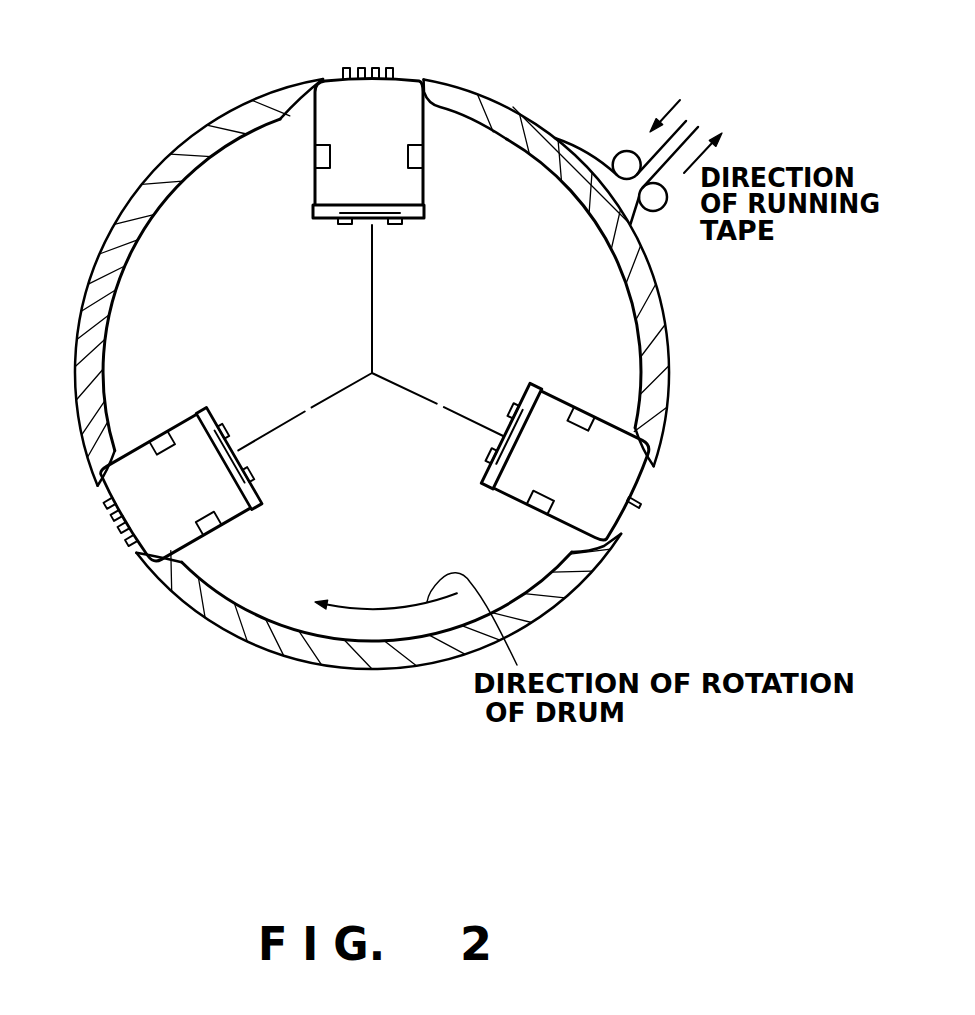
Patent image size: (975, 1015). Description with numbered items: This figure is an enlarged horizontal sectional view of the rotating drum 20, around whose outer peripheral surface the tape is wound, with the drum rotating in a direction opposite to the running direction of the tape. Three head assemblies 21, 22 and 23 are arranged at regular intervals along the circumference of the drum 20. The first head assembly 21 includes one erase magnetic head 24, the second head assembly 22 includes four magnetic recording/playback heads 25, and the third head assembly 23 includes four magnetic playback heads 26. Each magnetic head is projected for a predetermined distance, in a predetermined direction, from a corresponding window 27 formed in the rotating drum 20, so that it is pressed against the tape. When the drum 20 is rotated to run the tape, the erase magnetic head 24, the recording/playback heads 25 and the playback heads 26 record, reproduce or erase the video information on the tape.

The rotating drum 20 is at (111, 207).
The head assembly 21 is at (592, 443).
The head assembly 22 is at (402, 115).
The head assembly 23 is at (144, 480).
The erase magnetic head 24 is at (648, 505).
The magnetic recording/playback heads 25 is at (375, 63).
The magnetic playback heads 26 is at (108, 520).
The window 27 is at (401, 74).